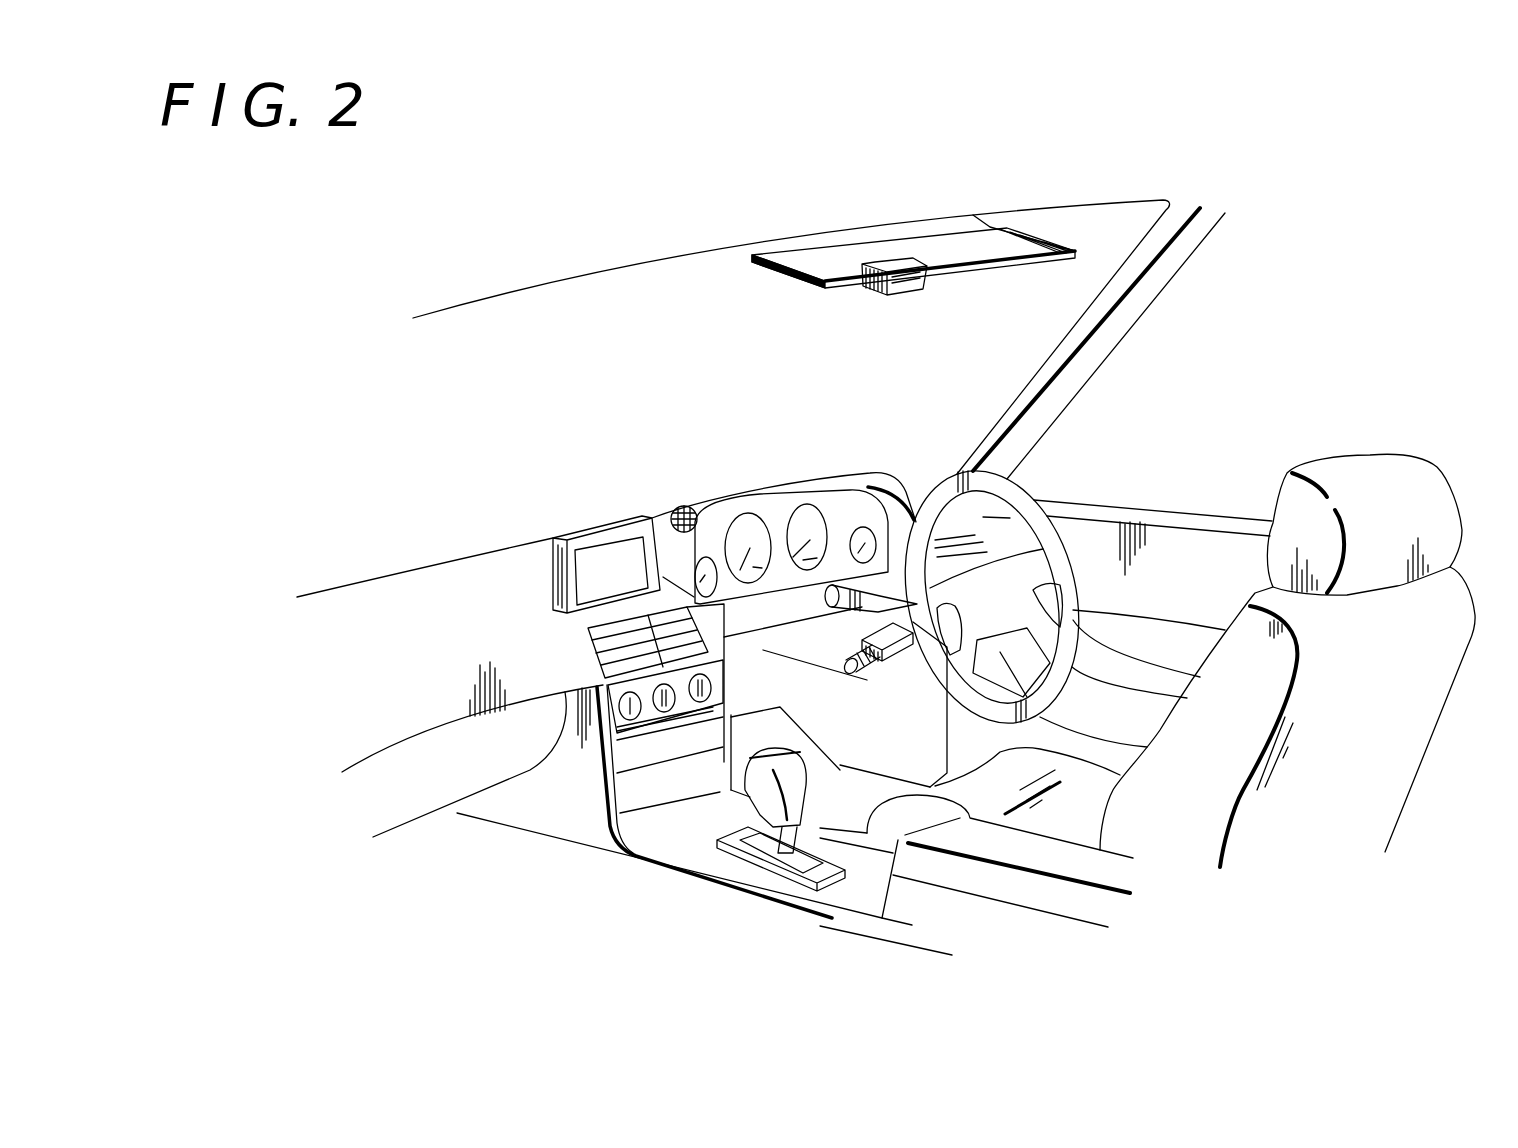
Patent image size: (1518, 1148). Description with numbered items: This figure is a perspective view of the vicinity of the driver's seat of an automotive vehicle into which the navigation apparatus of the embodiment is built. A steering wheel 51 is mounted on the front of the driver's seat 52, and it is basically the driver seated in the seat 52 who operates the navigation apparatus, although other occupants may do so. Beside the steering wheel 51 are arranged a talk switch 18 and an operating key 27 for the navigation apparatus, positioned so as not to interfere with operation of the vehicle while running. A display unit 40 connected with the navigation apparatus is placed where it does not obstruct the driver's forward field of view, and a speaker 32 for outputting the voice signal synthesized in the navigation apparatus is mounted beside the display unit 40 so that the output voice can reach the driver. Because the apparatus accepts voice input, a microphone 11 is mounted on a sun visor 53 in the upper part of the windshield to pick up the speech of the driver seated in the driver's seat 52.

The microphone 11 is at (926, 283).
The sun visor 53 is at (800, 255).
The display unit 40 is at (556, 560).
The speaker 32 is at (682, 505).
The steering wheel 51 is at (1033, 488).
The driver's seat 52 is at (1237, 508).
The talk switch 18 is at (852, 676).
The operating key 27 is at (903, 652).